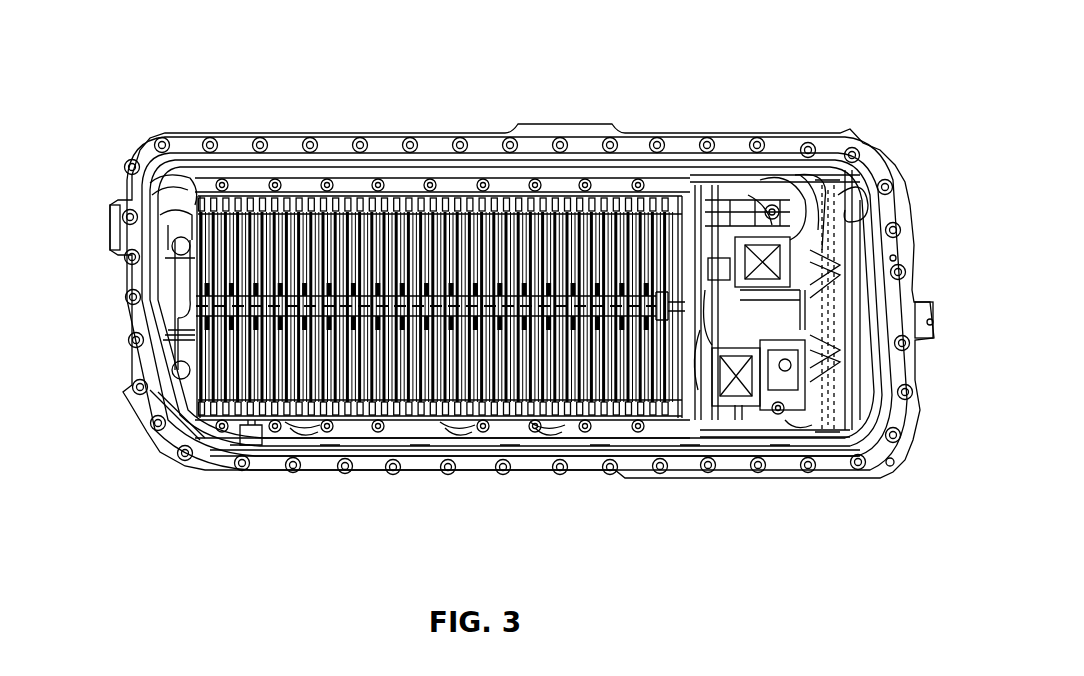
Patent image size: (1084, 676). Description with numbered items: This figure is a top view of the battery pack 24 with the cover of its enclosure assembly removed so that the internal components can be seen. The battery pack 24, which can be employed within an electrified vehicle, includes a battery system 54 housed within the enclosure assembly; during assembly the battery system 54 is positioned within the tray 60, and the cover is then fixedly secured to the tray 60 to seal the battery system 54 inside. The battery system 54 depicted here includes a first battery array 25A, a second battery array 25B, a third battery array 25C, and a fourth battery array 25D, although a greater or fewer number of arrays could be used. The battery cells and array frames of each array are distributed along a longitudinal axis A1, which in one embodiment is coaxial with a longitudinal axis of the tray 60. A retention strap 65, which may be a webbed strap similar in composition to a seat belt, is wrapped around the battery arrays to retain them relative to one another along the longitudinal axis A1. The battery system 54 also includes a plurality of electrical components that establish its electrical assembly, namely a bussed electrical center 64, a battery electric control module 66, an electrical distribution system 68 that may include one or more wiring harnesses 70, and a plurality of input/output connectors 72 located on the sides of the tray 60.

The battery pack 24 is at (661, 114).
The tray 60 is at (880, 170).
The wiring harness 70 is at (458, 175).
The input/output connector 72 is at (108, 228).
The longitudinal axis A1 is at (218, 306).
The retention strap 65 is at (566, 300).
The battery electric control module 66 is at (768, 200).
The bussed electrical center 64 is at (778, 415).
The electrical distribution system 68 is at (694, 408).
The battery system 54 is at (262, 438).
The first battery array 25A is at (305, 422).
The second battery array 25B is at (455, 420).
The third battery array 25C is at (543, 422).
The fourth battery array 25D is at (797, 420).